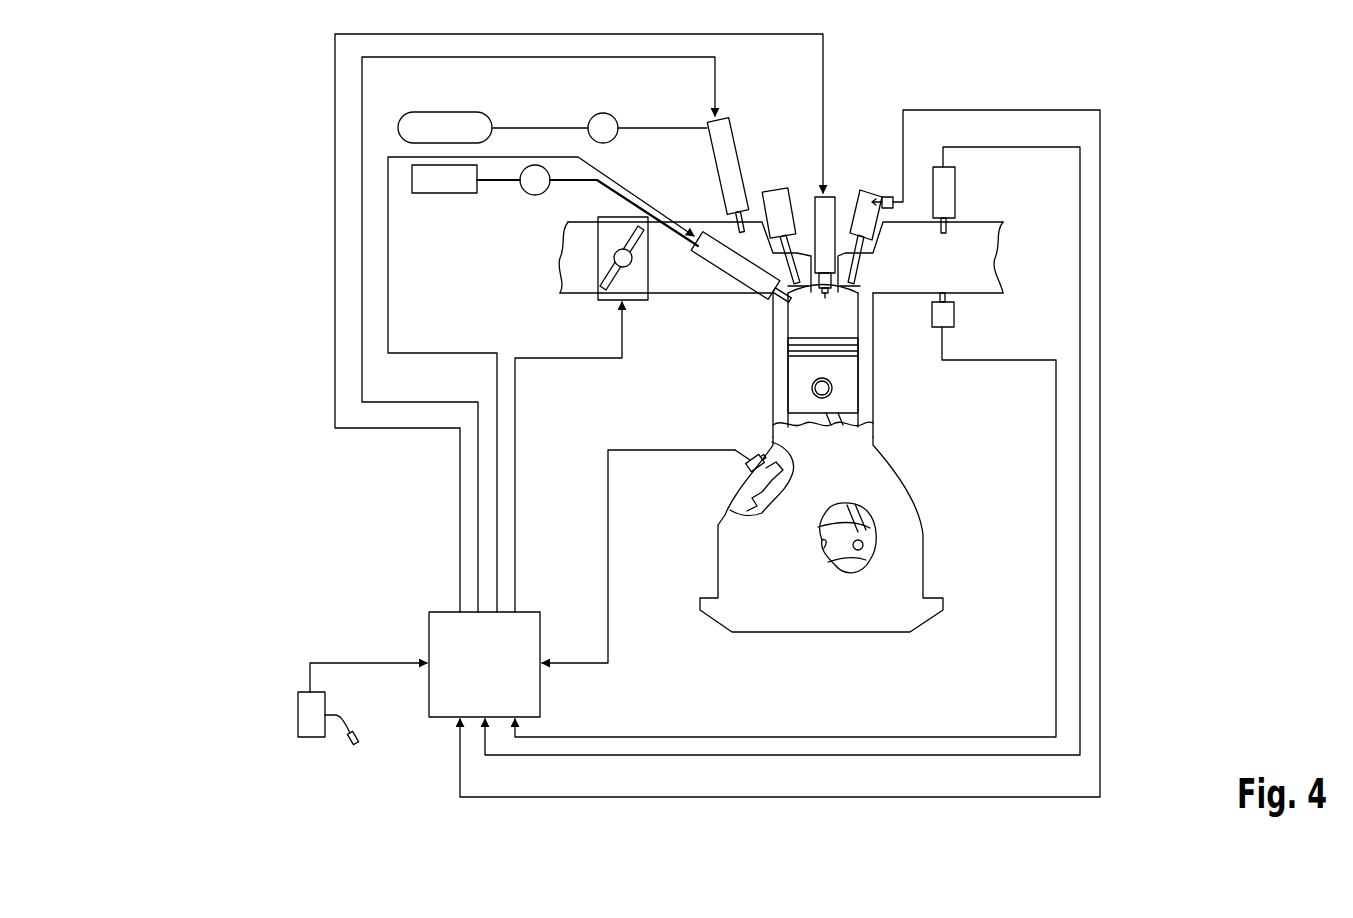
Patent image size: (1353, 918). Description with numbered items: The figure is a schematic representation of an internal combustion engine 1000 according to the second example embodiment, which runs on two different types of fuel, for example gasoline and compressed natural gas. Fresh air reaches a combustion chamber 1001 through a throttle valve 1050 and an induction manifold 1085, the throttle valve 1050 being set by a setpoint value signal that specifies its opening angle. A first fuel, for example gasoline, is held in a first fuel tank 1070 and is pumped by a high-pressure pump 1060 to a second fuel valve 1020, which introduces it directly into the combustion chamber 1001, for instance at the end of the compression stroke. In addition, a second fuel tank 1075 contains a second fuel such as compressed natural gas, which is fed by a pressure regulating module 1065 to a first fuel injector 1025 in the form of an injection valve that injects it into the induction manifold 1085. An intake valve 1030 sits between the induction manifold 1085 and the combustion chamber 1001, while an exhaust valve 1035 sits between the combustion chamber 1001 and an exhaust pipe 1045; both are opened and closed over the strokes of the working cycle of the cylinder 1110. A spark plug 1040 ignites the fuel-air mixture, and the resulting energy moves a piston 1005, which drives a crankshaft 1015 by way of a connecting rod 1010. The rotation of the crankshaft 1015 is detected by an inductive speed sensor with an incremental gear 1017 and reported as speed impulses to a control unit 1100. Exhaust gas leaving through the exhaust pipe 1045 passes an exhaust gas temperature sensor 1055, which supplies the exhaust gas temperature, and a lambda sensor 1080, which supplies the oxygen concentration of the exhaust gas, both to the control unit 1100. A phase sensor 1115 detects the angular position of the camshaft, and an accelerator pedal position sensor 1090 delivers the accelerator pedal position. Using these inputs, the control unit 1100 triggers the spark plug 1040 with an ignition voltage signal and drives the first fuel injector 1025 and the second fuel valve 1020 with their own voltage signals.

The internal combustion engine 1000 is at (265, 218).
The combustion chamber 1001 is at (843, 317).
The piston 1005 is at (798, 398).
The connecting rod 1010 is at (833, 423).
The crankshaft 1015 is at (863, 545).
The incremental gear 1017 is at (748, 466).
The second fuel valve 1020 is at (752, 287).
The first fuel injector 1025 is at (728, 148).
The intake valve 1030 is at (777, 194).
The exhaust valve 1035 is at (868, 192).
The spark plug 1040 is at (828, 203).
The exhaust pipe 1045 is at (993, 257).
The throttle valve 1050 is at (603, 291).
The exhaust gas temperature sensor 1055 is at (955, 315).
The high-pressure pump 1060 is at (535, 195).
The pressure regulating module 1065 is at (612, 141).
The first fuel tank 1070 is at (433, 193).
The second fuel tank 1075 is at (455, 113).
The lambda sensor 1080 is at (950, 190).
The induction manifold 1085 is at (680, 286).
The accelerator pedal position sensor 1090 is at (300, 725).
The control unit 1100 is at (440, 705).
The cylinder 1110 is at (868, 386).
The phase sensor 1115 is at (896, 208).